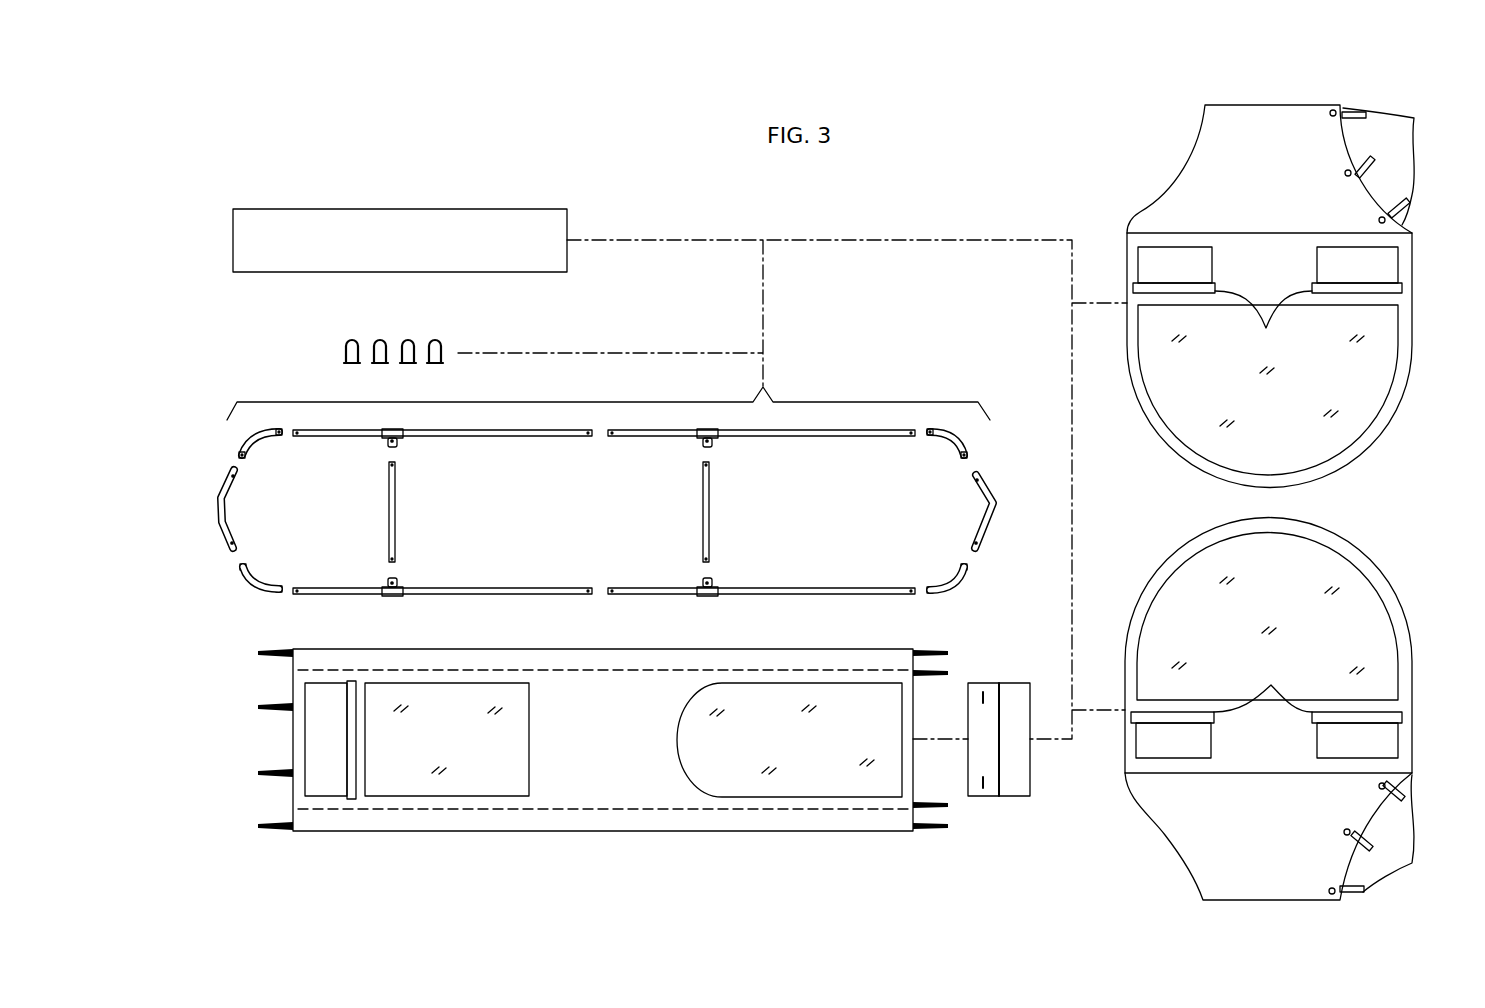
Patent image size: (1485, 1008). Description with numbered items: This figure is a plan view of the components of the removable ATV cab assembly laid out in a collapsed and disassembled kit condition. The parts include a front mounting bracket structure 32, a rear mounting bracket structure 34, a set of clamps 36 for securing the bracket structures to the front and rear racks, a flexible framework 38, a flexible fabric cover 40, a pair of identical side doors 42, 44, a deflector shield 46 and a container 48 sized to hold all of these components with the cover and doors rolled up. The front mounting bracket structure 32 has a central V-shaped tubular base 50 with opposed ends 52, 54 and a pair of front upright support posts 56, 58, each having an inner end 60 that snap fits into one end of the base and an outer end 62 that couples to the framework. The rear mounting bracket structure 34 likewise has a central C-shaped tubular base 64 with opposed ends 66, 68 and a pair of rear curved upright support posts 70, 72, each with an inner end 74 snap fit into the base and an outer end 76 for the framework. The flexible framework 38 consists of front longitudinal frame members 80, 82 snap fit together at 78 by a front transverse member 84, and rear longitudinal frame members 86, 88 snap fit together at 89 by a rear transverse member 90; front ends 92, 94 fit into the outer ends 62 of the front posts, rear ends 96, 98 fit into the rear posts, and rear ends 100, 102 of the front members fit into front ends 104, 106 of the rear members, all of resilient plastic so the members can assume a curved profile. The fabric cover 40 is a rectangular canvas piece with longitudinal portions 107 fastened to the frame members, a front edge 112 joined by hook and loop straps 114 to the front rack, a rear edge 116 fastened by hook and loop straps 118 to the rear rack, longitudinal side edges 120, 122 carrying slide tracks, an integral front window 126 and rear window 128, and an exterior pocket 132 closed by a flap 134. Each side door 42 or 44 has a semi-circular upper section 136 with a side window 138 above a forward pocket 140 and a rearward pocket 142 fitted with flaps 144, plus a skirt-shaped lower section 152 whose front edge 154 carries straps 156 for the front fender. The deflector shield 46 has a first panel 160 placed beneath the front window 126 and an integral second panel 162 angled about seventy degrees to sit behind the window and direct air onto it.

The front mounting bracket structure 32 is at (1009, 500).
The rear mounting bracket structure 34 is at (236, 499).
The set of clamps 36 is at (435, 341).
The flexible framework 38 is at (783, 410).
The flexible fabric cover 40 is at (597, 758).
The side door 42 is at (1428, 659).
The side door 44 is at (1426, 335).
The deflector shield 46 is at (1000, 773).
The container 48 is at (400, 209).
The central V-shaped tubular base 50 is at (987, 509).
The end of V-shaped base 52 is at (985, 548).
The end of V-shaped base 54 is at (981, 472).
The front upright support post 56 is at (953, 591).
The front upright support post 58 is at (952, 430).
The inner end of front support post 60 is at (960, 459).
The outer end of front support post 62 is at (932, 428).
The central C-shaped tubular base 64 is at (229, 507).
The end of C-shaped base 66 is at (237, 550).
The end of C-shaped base 68 is at (230, 469).
The rear curved upright support post 70 is at (250, 576).
The rear curved upright support post 72 is at (254, 499).
The inner end of rear support post 74 is at (239, 453).
The outer end of rear support post 76 is at (283, 428).
The snap fit connection 78 is at (704, 446).
The front longitudinal frame member 80 is at (820, 588).
The front longitudinal frame member 82 is at (825, 430).
The front transverse member 84 is at (709, 512).
The rear longitudinal frame member 86 is at (493, 588).
The rear longitudinal frame member 88 is at (497, 430).
The snap fit connection 89 is at (397, 445).
The rear transverse member 90 is at (395, 512).
The front end of front longitudinal frame member 92 is at (917, 588).
The front end of front longitudinal frame member 94 is at (920, 430).
The rear end of rear longitudinal frame member 96 is at (295, 589).
The rear end of rear longitudinal frame member 98 is at (295, 436).
The rear end of front longitudinal frame member 100 is at (610, 588).
The rear end of front longitudinal frame member 102 is at (612, 430).
The front end of rear longitudinal frame member 104 is at (589, 588).
The front end of rear longitudinal frame member 106 is at (590, 430).
The longitudinal portions 107 is at (603, 668).
The front edge 112 is at (913, 719).
The hook and loop straps 114 is at (950, 673).
The rear edge 116 is at (293, 680).
The hook and loop straps 118 is at (258, 653).
The longitudinal side edge 120 is at (555, 831).
The longitudinal side edge 122 is at (525, 649).
The front window 126 is at (697, 745).
The rear window 128 is at (525, 762).
The exterior pocket 132 is at (305, 738).
The flap 134 is at (353, 683).
The upper section 136 is at (1380, 454).
The side window 138 is at (1378, 385).
The forward pocket 140 is at (1400, 266).
The rearward pocket 142 is at (1213, 263).
The flaps 144 is at (1263, 501).
The lower section 152 is at (1198, 170).
The front edge 154 is at (1338, 141).
The straps 156 is at (1405, 205).
The first panel 160 is at (1020, 765).
The second panel 162 is at (975, 756).